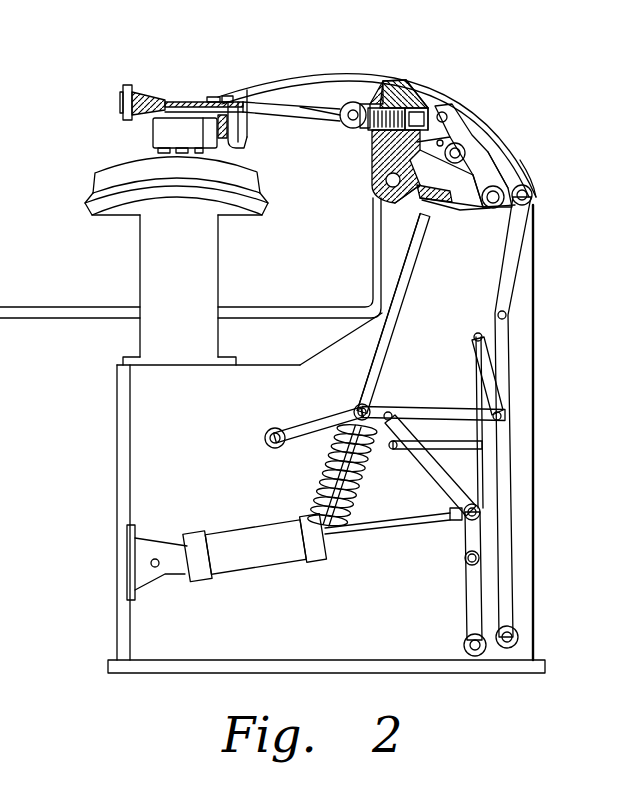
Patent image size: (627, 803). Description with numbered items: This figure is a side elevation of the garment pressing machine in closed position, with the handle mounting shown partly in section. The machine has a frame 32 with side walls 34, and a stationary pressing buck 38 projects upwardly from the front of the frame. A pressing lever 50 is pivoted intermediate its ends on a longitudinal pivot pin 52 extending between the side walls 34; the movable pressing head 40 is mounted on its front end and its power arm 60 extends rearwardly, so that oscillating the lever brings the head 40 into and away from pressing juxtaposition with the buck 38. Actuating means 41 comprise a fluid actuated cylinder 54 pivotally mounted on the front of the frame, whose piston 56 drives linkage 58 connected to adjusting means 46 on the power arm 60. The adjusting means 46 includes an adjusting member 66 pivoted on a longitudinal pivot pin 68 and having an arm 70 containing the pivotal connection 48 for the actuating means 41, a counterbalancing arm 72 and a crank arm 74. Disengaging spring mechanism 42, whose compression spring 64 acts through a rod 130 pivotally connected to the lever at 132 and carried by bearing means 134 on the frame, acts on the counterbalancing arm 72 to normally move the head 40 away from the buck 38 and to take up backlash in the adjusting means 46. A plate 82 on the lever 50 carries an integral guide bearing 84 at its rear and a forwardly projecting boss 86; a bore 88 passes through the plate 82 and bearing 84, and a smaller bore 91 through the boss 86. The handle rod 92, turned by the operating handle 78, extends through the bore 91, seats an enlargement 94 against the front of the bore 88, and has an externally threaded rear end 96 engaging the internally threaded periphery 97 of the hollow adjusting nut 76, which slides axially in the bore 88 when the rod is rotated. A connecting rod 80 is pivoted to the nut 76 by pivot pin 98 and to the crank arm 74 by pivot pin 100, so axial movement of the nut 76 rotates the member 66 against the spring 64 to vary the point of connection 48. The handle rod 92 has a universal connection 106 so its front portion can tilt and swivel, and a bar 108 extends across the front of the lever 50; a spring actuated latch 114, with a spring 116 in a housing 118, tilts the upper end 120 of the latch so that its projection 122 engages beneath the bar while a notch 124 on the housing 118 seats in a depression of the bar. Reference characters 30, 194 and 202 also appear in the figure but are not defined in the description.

The frame 30 is at (537, 365).
The frame 32 is at (535, 489).
The side walls 34 is at (520, 312).
The stationary pressing buck 38 is at (270, 208).
The movable pressing member 40 is at (260, 180).
The actuating means 41 is at (500, 455).
The disengaging spring mechanism 42 is at (392, 342).
The adjusting means 46 is at (497, 170).
The point of connection 48 is at (533, 196).
The pressing lever 50 is at (312, 88).
The longitudinal pivot pin 52 is at (385, 202).
The fluid actuated cylinder 54 is at (235, 538).
The piston 56 is at (366, 530).
The linkage 58 is at (500, 428).
The power arm 60 is at (530, 176).
The compression spring 64 is at (327, 472).
The adjusting member 66 is at (520, 175).
The longitudinal pivot pin 68 is at (490, 208).
The arm 70 is at (530, 188).
The counterbalancing arm 72 is at (445, 215).
The crank arm 74 is at (455, 122).
The axially movable means 76 is at (400, 80).
The operating handle 78 is at (135, 86).
The connecting rod 80 is at (445, 112).
The plate 82 is at (392, 80).
The guide bearing 84 is at (404, 110).
The boss 86 is at (376, 100).
The bore 88 is at (412, 82).
The bore 91 is at (366, 128).
The handle rod 92 is at (274, 102).
The enlargement 94 is at (386, 184).
The externally threaded rear end 96 is at (420, 110).
The internally threaded periphery 97 is at (370, 104).
The pivot pin 98 is at (430, 100).
The pivot pin 100 is at (462, 100).
The universal connection 106 is at (360, 142).
The bar 108 is at (210, 135).
The spring actuated latch 114 is at (248, 138).
The spring 116 is at (212, 97).
The housing 118 is at (210, 98).
The upper end 120 is at (247, 90).
The projection 122 is at (228, 142).
The notch 124 is at (227, 96).
The rod 130 is at (416, 276).
The pivotal connection 132 is at (482, 138).
The bearing means 134 is at (360, 406).
The block 194 is at (417, 198).
The block bottom 202 is at (427, 190).